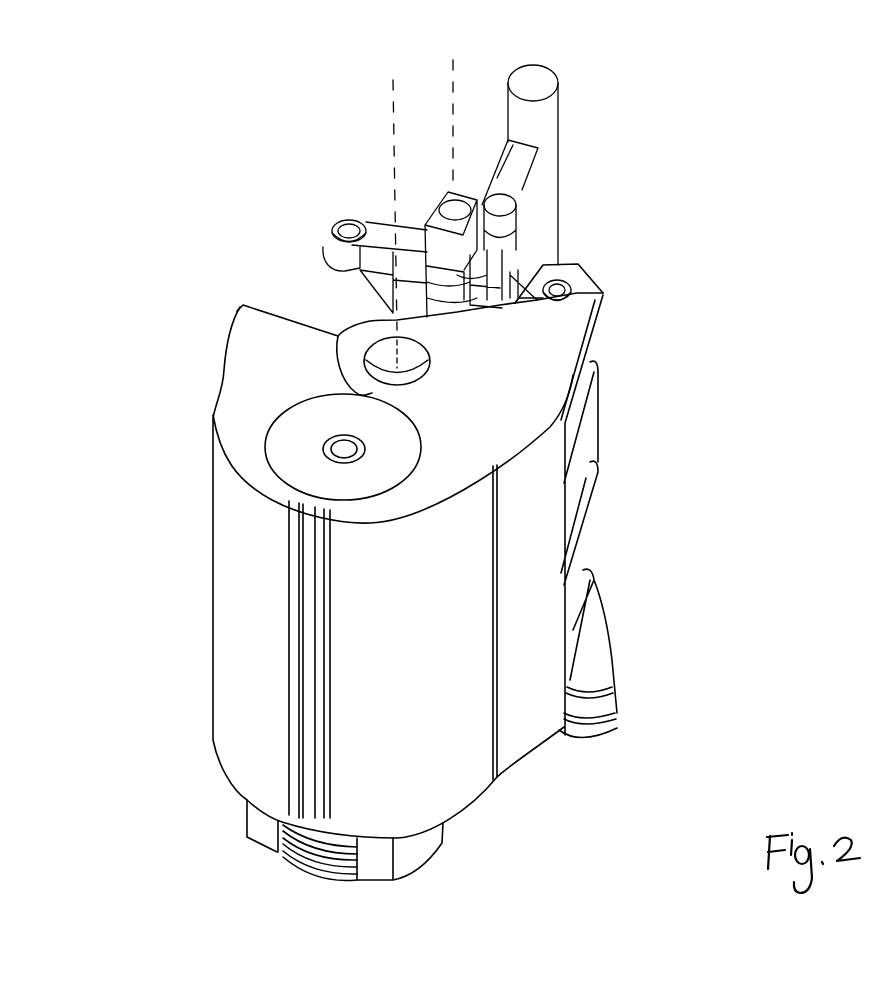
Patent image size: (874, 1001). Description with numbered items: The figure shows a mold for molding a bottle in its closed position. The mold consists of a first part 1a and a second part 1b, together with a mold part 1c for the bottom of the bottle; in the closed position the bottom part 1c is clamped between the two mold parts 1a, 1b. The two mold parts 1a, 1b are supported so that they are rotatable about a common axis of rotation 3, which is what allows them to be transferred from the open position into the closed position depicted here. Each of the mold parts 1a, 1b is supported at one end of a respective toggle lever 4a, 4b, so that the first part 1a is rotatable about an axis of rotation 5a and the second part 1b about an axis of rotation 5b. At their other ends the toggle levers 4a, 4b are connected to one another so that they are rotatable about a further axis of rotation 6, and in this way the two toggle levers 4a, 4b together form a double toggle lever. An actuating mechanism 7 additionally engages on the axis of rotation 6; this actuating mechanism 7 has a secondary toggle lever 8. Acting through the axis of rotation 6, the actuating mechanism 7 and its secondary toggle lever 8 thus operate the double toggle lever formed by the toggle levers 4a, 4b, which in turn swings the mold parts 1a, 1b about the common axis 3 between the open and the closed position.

The first part 1a is at (297, 477).
The second part 1b is at (375, 480).
The mold part for the bottom of the bottle 1c is at (327, 866).
The common axis of rotation 3 is at (388, 78).
The toggle lever 4a is at (333, 228).
The toggle lever 4b is at (487, 288).
The axis of rotation 5a is at (348, 226).
The axis of rotation 5b is at (562, 291).
The axis of rotation 6 is at (460, 212).
The actuating mechanism 7 is at (558, 102).
The secondary toggle lever 8 is at (487, 252).